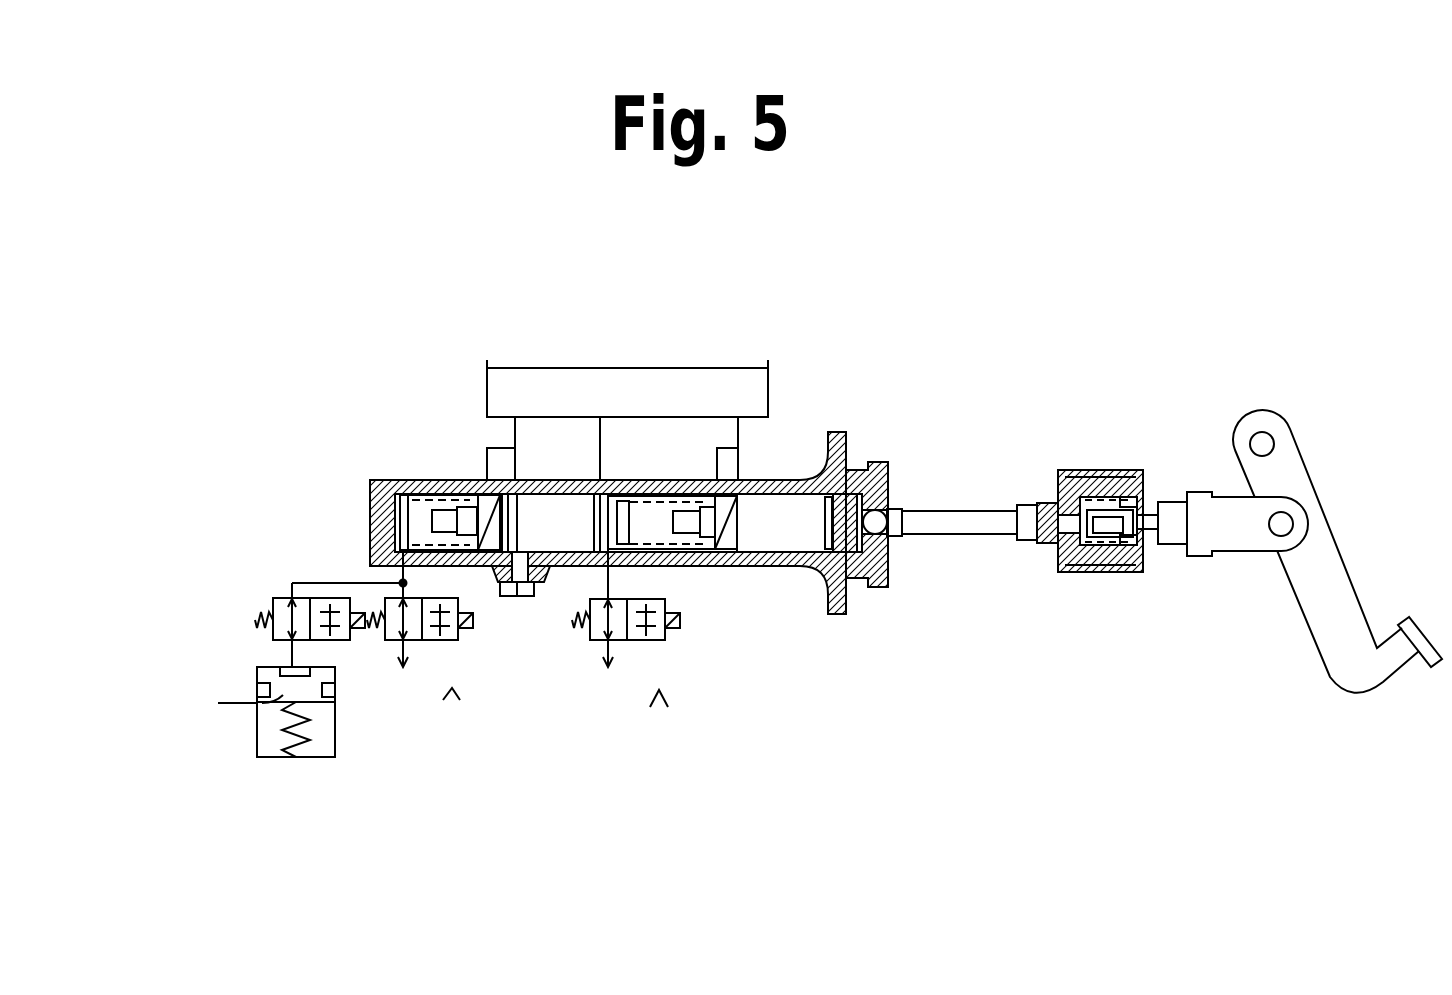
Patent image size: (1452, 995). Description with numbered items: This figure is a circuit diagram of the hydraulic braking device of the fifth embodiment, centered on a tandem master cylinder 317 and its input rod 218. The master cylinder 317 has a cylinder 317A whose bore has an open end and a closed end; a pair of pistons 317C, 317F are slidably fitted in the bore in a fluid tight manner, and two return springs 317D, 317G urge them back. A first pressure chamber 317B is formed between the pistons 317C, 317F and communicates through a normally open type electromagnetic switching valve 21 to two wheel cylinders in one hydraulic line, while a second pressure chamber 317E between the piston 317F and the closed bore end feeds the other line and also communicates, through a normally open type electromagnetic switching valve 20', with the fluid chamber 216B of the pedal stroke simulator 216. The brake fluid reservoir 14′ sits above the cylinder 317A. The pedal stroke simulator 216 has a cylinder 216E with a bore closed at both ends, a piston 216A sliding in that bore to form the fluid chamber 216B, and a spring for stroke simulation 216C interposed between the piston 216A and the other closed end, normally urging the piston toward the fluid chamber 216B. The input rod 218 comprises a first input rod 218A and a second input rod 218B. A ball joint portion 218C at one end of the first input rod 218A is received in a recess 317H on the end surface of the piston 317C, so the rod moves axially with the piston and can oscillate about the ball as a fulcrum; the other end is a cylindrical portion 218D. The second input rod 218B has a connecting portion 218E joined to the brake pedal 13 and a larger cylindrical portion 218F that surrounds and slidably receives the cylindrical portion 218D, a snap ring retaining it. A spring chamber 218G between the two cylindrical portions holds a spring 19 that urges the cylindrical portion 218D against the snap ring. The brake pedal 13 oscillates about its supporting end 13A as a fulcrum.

The master cylinder 317 is at (793, 462).
The cylinder 317A is at (596, 494).
The first pressure chamber 317B is at (646, 512).
The piston 317C is at (772, 528).
The return spring 317D is at (684, 495).
The second pressure chamber 317E is at (417, 510).
The piston 317F is at (552, 528).
The return spring 317G is at (458, 497).
The recess 317H is at (895, 487).
The brake fluid reservoir 14′ is at (768, 378).
The input rod 218 is at (975, 552).
The first input rod 218A is at (948, 528).
The second input rod 218B is at (1172, 545).
The ball joint portion 218C is at (900, 515).
The cylindrical portion 218D is at (1083, 473).
The connecting portion 218E is at (1276, 537).
The cylindrical portion 218F is at (1103, 480).
The spring chamber 218G is at (1062, 572).
The spring 19 is at (1137, 490).
The brake pedal 13 is at (1295, 482).
The supporting end 13A is at (1262, 443).
The normally open type electromagnetic switching valve 20' is at (345, 541).
The normally open type electromagnetic switching valve 21 is at (625, 602).
The pedal stroke simulator 216 is at (336, 700).
The piston 216A is at (232, 708).
The fluid chamber 216B is at (288, 667).
The spring for stroke simulation 216C is at (290, 722).
The cylinder 216E is at (338, 740).